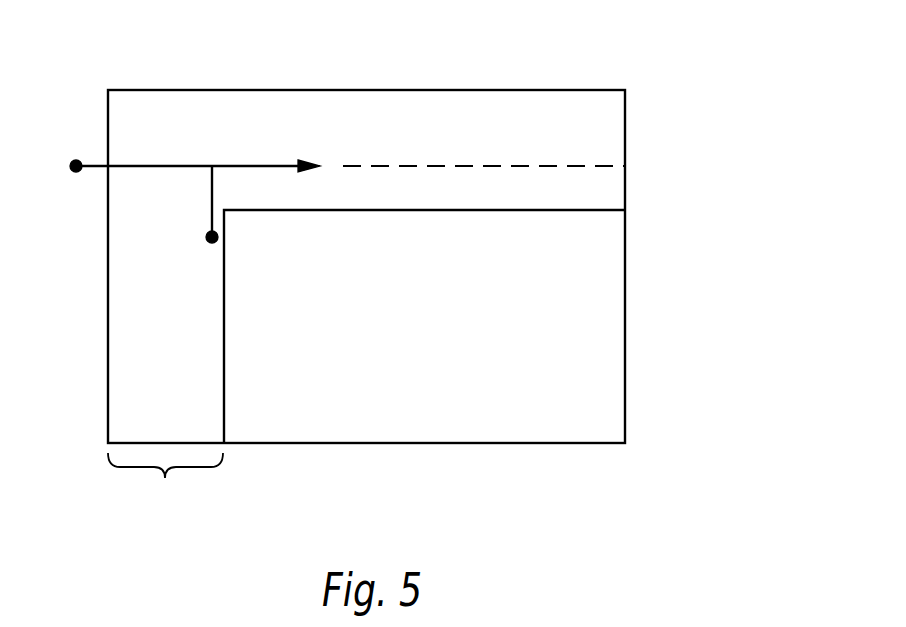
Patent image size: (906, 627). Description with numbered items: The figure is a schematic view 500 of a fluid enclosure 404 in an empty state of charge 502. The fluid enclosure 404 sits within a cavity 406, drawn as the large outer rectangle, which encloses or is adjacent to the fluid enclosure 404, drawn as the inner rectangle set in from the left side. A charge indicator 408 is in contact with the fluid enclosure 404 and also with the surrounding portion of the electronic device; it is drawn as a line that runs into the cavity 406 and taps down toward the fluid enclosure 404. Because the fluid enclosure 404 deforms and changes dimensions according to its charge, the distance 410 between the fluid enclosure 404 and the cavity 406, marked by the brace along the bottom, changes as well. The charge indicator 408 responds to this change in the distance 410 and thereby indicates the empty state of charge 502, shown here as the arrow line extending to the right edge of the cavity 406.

The schematic view 500 is at (668, 42).
The cavity 406 is at (368, 90).
The fluid enclosure 404 is at (626, 295).
The empty state of charge 502 is at (626, 166).
The charge indicator 408 is at (167, 163).
The distance 410 is at (165, 486).